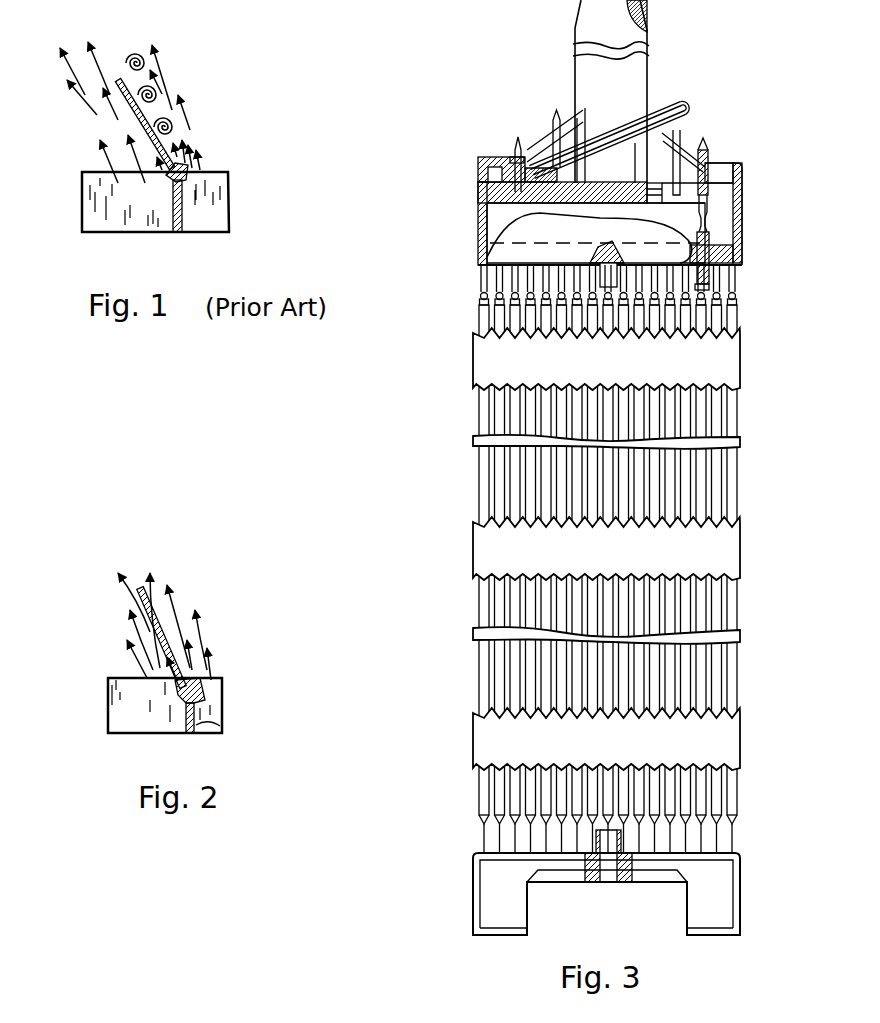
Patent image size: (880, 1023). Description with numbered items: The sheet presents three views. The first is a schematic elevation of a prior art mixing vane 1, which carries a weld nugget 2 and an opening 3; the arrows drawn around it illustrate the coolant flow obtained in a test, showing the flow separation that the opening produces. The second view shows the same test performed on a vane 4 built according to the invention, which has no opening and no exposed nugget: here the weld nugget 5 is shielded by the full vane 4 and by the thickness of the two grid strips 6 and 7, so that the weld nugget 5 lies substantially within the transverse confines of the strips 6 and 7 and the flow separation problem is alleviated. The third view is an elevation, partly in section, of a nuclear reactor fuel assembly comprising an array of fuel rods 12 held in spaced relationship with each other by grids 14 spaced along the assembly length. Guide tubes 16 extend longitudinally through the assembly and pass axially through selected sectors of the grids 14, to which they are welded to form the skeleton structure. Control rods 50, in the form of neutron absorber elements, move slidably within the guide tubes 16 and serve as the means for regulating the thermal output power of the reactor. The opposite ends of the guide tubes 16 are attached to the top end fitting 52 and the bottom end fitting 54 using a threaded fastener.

In FIG. 1, the vane 1 is at (130, 112).
In FIG. 1, the weld nugget 2 is at (137, 104).
In FIG. 1, the opening 3 is at (163, 155).
In FIG. 2, the vane 4 is at (143, 603).
In FIG. 2, the weld nugget 5 is at (197, 697).
In FIG. 2, the strip 6 is at (147, 717).
In FIG. 2, the strip 7 is at (200, 727).
In FIG. 3, the fuel rods 12 is at (700, 493).
In FIG. 3, the grids 14 is at (627, 377).
In FIG. 3, the guide tubes 16 is at (710, 275).
In FIG. 3, the control rods 50 is at (705, 247).
In FIG. 3, the top end fitting 52 is at (740, 172).
In FIG. 3, the bottom end fitting 54 is at (737, 872).